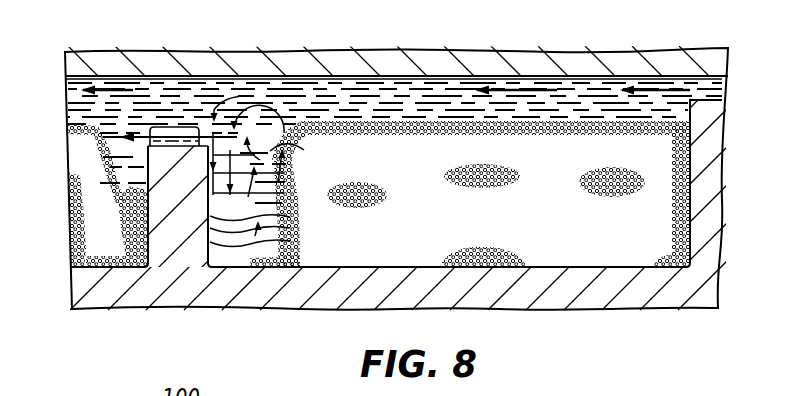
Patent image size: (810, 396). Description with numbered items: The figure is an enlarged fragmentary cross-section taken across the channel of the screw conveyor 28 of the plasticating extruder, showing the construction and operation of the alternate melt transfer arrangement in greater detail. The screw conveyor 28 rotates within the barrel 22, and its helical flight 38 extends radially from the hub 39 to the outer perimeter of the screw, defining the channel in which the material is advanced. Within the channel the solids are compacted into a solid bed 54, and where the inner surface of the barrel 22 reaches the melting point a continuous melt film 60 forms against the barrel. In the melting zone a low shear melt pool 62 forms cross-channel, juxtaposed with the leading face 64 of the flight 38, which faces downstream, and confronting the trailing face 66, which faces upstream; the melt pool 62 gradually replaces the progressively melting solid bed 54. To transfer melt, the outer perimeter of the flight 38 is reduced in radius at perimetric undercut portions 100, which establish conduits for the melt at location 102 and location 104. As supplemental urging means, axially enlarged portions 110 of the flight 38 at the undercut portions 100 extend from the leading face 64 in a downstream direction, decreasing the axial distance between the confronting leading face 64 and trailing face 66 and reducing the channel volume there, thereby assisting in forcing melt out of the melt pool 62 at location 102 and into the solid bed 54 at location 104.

The barrel 22 is at (667, 57).
The screw conveyor 28 is at (537, 280).
The helical flight 38 is at (163, 163).
The hub 39 is at (403, 264).
The solid bed 54 is at (540, 150).
The melt film 60 is at (446, 101).
The melt pool 62 is at (310, 162).
The leading face 64 is at (258, 219).
The trailing face 66 is at (147, 182).
The perimetric undercut portion 100 is at (170, 127).
The location 102 is at (230, 247).
The location 104 is at (110, 243).
The axially enlarged portion 110 is at (208, 197).